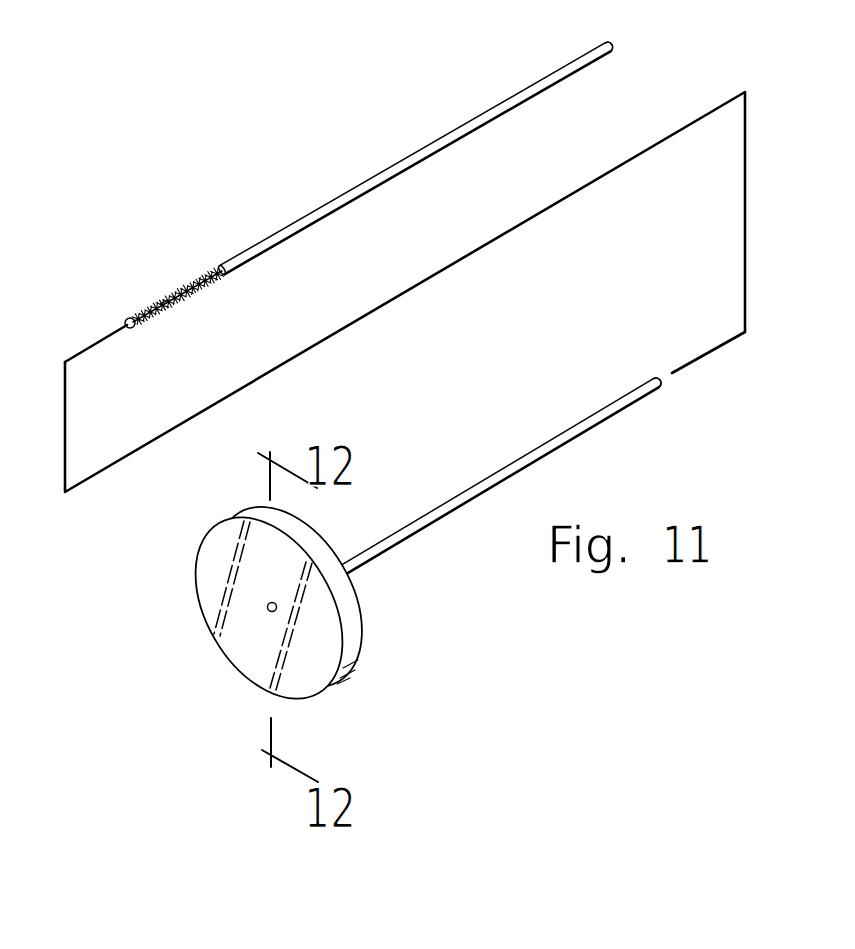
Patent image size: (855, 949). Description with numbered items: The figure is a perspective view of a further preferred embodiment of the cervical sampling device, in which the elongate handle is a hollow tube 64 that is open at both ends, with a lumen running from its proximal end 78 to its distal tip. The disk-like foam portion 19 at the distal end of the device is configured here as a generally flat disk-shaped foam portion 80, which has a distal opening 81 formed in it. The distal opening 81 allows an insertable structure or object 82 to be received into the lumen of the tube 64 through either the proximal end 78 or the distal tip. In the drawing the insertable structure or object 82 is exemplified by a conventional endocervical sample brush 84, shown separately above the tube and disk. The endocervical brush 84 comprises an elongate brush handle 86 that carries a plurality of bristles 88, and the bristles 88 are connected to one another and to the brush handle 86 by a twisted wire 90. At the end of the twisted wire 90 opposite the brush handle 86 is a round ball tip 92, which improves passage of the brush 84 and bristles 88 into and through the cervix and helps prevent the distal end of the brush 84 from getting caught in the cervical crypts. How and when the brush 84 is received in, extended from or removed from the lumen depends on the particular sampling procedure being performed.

The disk-like foam portion 19 is at (190, 546).
The hollow tube 64 is at (530, 464).
The proximal end 78 is at (655, 392).
The disk-shaped foam portion 80 is at (345, 590).
The distal opening 81 is at (272, 612).
The insertable structure or object 82 is at (338, 192).
The endocervical brush 84 is at (255, 240).
The brush handle 86 is at (475, 113).
The bristles 88 is at (172, 295).
The twisted wire 90 is at (162, 308).
The round ball tip 92 is at (120, 325).